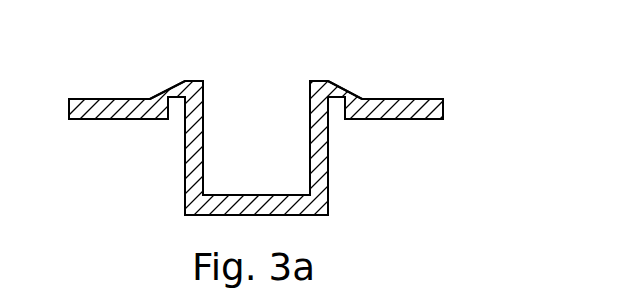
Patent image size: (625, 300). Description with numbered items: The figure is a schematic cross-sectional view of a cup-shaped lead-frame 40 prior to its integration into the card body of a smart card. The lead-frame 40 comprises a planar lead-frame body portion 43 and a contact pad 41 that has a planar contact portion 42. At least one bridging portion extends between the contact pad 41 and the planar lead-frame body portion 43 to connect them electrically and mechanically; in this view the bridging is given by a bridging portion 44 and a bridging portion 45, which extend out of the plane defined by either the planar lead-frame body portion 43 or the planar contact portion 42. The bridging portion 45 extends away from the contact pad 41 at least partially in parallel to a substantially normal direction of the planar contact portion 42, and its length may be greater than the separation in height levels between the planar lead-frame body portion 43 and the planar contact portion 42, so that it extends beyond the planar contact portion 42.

The lead-frame 40 is at (220, 50).
The contact pad 41 is at (470, 111).
The planar contact portion 42 is at (390, 98).
The planar lead-frame body portion 43 is at (284, 195).
The bridging portion 44 is at (172, 88).
The bridging portion 45 is at (185, 162).